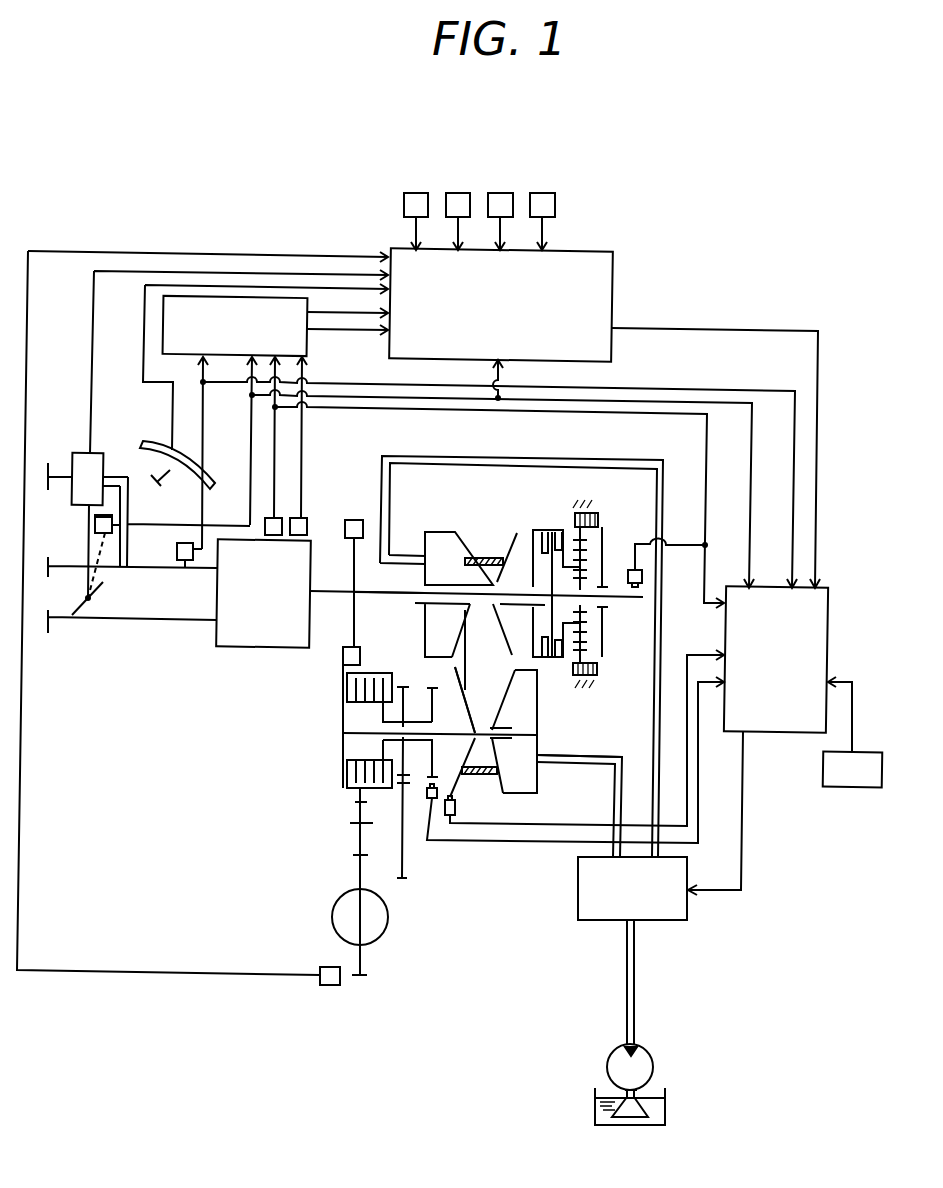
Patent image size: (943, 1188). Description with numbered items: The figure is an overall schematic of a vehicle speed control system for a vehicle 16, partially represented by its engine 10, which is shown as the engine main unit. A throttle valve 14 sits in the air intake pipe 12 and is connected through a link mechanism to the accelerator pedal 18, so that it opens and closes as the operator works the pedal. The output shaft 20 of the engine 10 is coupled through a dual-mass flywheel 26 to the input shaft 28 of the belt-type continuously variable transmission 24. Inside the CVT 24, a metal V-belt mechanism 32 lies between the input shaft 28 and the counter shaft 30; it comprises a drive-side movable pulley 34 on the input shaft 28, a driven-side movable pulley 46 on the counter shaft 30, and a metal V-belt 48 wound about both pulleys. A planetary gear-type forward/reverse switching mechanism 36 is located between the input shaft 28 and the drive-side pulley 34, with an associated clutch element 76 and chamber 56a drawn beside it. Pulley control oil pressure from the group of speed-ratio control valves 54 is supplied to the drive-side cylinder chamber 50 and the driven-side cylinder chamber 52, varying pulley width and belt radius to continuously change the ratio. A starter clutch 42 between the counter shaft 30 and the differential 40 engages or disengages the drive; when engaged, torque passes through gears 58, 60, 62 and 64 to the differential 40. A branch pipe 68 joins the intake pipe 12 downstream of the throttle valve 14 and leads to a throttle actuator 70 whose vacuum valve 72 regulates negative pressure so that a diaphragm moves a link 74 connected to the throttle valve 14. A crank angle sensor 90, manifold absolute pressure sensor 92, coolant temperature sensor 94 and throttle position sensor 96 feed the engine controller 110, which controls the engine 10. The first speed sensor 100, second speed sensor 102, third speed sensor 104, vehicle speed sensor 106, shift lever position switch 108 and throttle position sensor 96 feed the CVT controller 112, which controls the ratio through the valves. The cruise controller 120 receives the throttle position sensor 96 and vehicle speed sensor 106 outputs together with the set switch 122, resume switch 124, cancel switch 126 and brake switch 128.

The engine 10 is at (237, 648).
The air intake pipe 12 is at (165, 622).
The throttle valve 14 is at (80, 622).
The vehicle 16 is at (284, 237).
The accelerator pedal 18 is at (182, 486).
The output shaft 20 is at (332, 596).
The continuously variable transmission 24 is at (574, 455).
The dual-mass flywheel 26 is at (357, 520).
The input shaft 28 is at (372, 596).
The counter shaft 30 is at (448, 741).
The metal V-belt mechanism 32 is at (553, 685).
The drive-side movable pulley 34 is at (480, 520).
The forward/reverse switching mechanism 36 is at (606, 503).
The differential 40 is at (388, 935).
The starter clutch 42 is at (365, 672).
The driven-side movable pulley 46 is at (553, 790).
The metal V-belt 48 is at (472, 666).
The drive-side cylinder chamber 50 is at (432, 570).
The driven-side cylinder chamber 52 is at (505, 723).
The speed-ratio control valves 54 is at (620, 900).
The hydraulic chamber 56a is at (548, 773).
The gear 58 is at (404, 685).
The gear 60 is at (404, 881).
The gear 62 is at (352, 800).
The gear 64 is at (365, 979).
The branch pipe 68 is at (128, 548).
The throttle actuator 70 is at (71, 443).
The vacuum valve 72 is at (103, 455).
The link 74 is at (92, 518).
The forward clutch 76 is at (541, 528).
The crank angle sensor 90 is at (282, 517).
The manifold absolute pressure sensor 92 is at (185, 562).
The coolant temperature sensor 94 is at (300, 517).
The throttle position sensor 96 is at (95, 530).
The first speed sensor 100 is at (642, 582).
The second speed sensor 102 is at (456, 808).
The third speed sensor 104 is at (566, 777).
The vehicle speed sensor 106 is at (330, 986).
The shift lever position switch 108 is at (843, 788).
The engine controller 110 is at (307, 348).
The CVT controller 112 is at (827, 628).
The cruise controller 120 is at (612, 346).
The set switch 122 is at (415, 193).
The resume switch 124 is at (456, 193).
The cancel switch 126 is at (501, 193).
The brake switch 128 is at (546, 193).